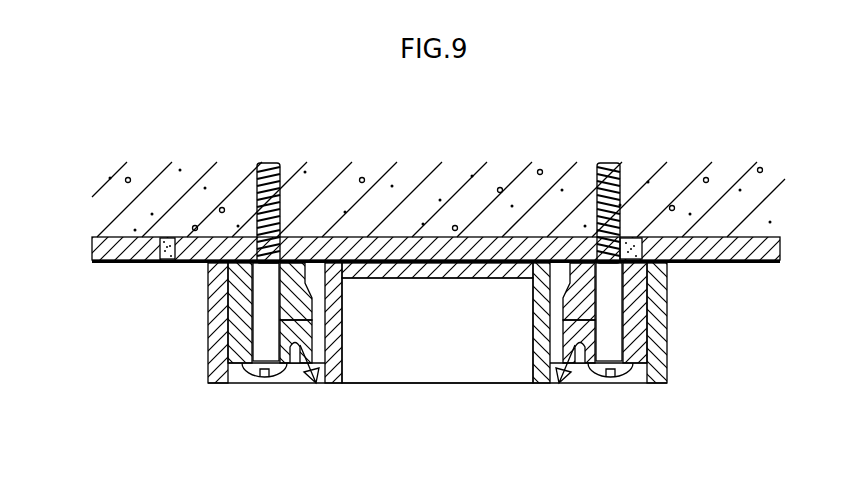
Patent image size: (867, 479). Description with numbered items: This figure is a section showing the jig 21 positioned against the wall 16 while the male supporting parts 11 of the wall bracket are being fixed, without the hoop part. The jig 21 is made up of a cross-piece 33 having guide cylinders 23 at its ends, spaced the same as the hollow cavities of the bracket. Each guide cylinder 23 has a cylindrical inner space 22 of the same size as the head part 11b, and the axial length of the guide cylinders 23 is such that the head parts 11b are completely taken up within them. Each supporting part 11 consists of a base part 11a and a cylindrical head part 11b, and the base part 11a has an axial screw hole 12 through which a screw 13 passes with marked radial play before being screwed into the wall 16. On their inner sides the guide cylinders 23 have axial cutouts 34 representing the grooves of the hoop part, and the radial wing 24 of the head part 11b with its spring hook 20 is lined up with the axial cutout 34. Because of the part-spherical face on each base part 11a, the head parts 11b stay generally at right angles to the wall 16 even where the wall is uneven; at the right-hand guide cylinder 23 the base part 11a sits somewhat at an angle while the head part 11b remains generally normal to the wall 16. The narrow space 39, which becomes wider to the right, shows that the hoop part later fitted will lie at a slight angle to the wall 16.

The male supporting part 11 is at (228, 277).
The base part 11a is at (310, 287).
The head part 11b is at (242, 333).
The axial screw hole 12 is at (249, 262).
The screw 13 is at (271, 163).
The wall 16 is at (441, 186).
The spring hook 20 is at (312, 385).
The jig 21 is at (437, 386).
The cylindrical inner space 22 is at (238, 377).
The guide cylinder 23 is at (218, 373).
The radial wing 24 is at (314, 350).
The cross-piece 33 is at (424, 276).
The axial cutout 34 is at (316, 320).
The narrow space 39 is at (528, 263).